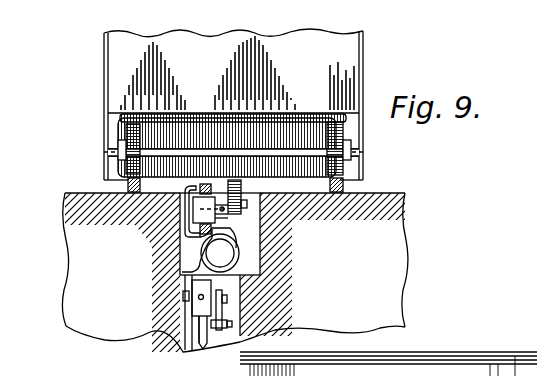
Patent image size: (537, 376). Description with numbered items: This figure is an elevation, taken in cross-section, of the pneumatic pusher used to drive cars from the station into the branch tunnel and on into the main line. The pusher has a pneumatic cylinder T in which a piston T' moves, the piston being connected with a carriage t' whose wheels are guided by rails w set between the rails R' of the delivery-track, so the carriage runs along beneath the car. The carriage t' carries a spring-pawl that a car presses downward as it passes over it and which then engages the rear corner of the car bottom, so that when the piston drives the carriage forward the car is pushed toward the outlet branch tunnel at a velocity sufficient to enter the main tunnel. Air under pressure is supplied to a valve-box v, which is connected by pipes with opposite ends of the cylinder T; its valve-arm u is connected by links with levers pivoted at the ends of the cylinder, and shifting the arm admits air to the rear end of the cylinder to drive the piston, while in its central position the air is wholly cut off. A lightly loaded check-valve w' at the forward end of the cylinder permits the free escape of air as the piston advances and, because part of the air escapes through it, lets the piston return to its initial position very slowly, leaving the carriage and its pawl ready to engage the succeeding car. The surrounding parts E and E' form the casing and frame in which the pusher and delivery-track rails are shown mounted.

The casing E is at (217, 104).
The frame E' is at (235, 269).
The rails of the delivery-track R' is at (253, 153).
The pneumatic cylinder T is at (255, 253).
The piston T' is at (220, 253).
The rails w is at (207, 209).
The check-valve w' is at (209, 250).
The carriage t' is at (232, 227).
The valve-box v is at (203, 288).
The valve-arm u is at (224, 310).